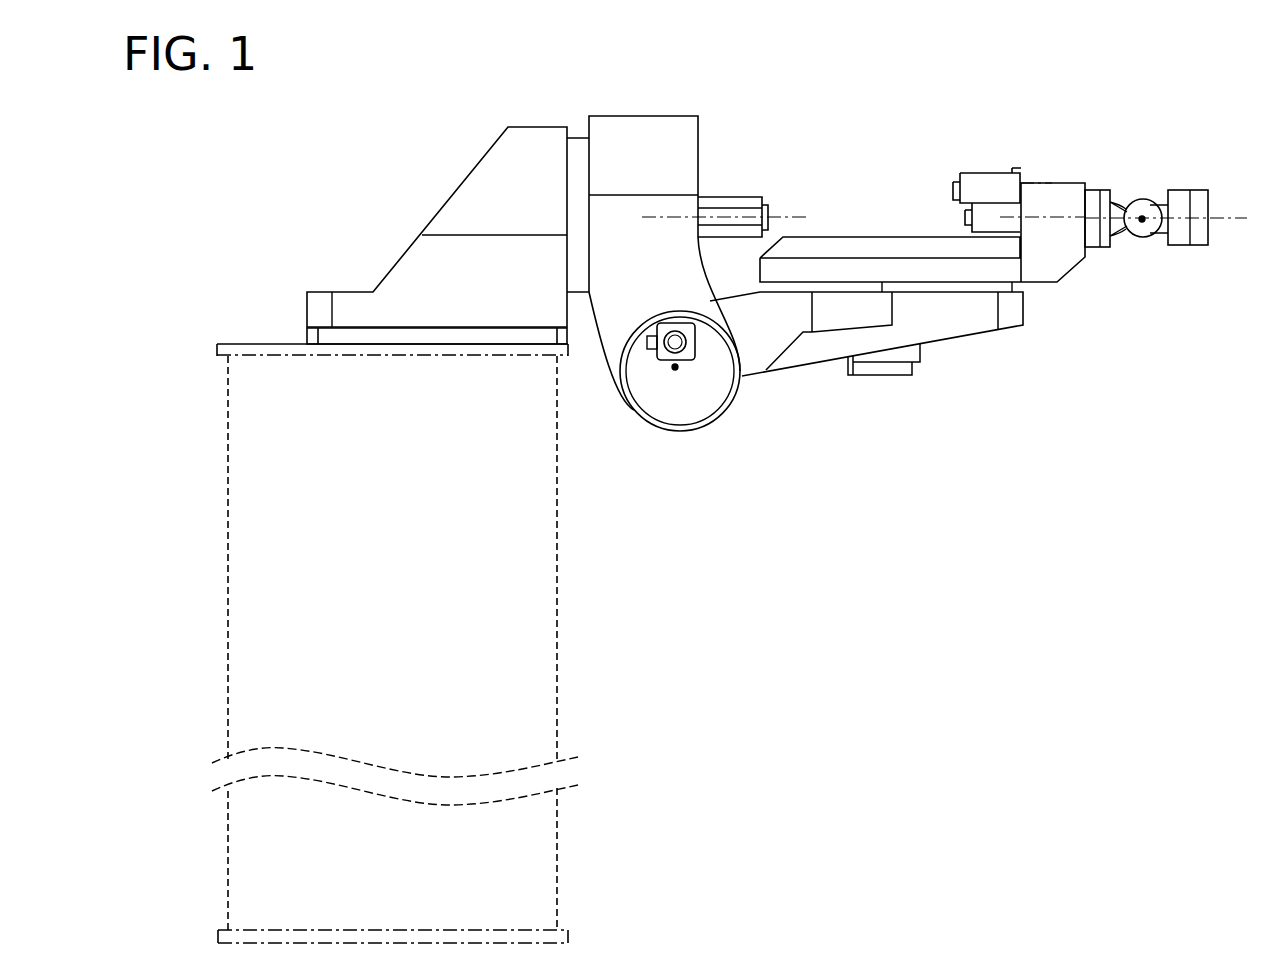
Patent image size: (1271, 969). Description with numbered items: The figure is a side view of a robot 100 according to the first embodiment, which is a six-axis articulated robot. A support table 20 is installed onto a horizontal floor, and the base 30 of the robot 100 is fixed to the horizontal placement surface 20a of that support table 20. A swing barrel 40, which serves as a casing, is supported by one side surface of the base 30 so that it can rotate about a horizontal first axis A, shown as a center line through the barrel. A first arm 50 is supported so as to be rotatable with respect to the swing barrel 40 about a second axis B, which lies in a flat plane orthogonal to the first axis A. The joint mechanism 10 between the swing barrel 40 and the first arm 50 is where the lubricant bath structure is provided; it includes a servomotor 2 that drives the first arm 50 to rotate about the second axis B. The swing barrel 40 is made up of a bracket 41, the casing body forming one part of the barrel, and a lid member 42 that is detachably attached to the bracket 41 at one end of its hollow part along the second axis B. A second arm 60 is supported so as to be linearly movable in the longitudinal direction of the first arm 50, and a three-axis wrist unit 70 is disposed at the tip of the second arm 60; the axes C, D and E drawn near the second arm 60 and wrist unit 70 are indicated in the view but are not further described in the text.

The robot 100 is at (388, 120).
The joint mechanism 10 is at (758, 395).
The servomotor 2 is at (678, 322).
The support table 20 is at (387, 592).
The horizontal placement surface 20a is at (243, 343).
The base 30 is at (430, 220).
The swing barrel 40 is at (645, 116).
The bracket 41 is at (600, 358).
The lid member 42 is at (663, 422).
The first arm 50 is at (720, 444).
The second arm 60 is at (903, 237).
The wrist unit 70 is at (1100, 193).
The first axis A is at (787, 217).
The second axis B is at (675, 370).
The axis C is at (1043, 218).
The axis D is at (1142, 222).
The axis E is at (1155, 167).